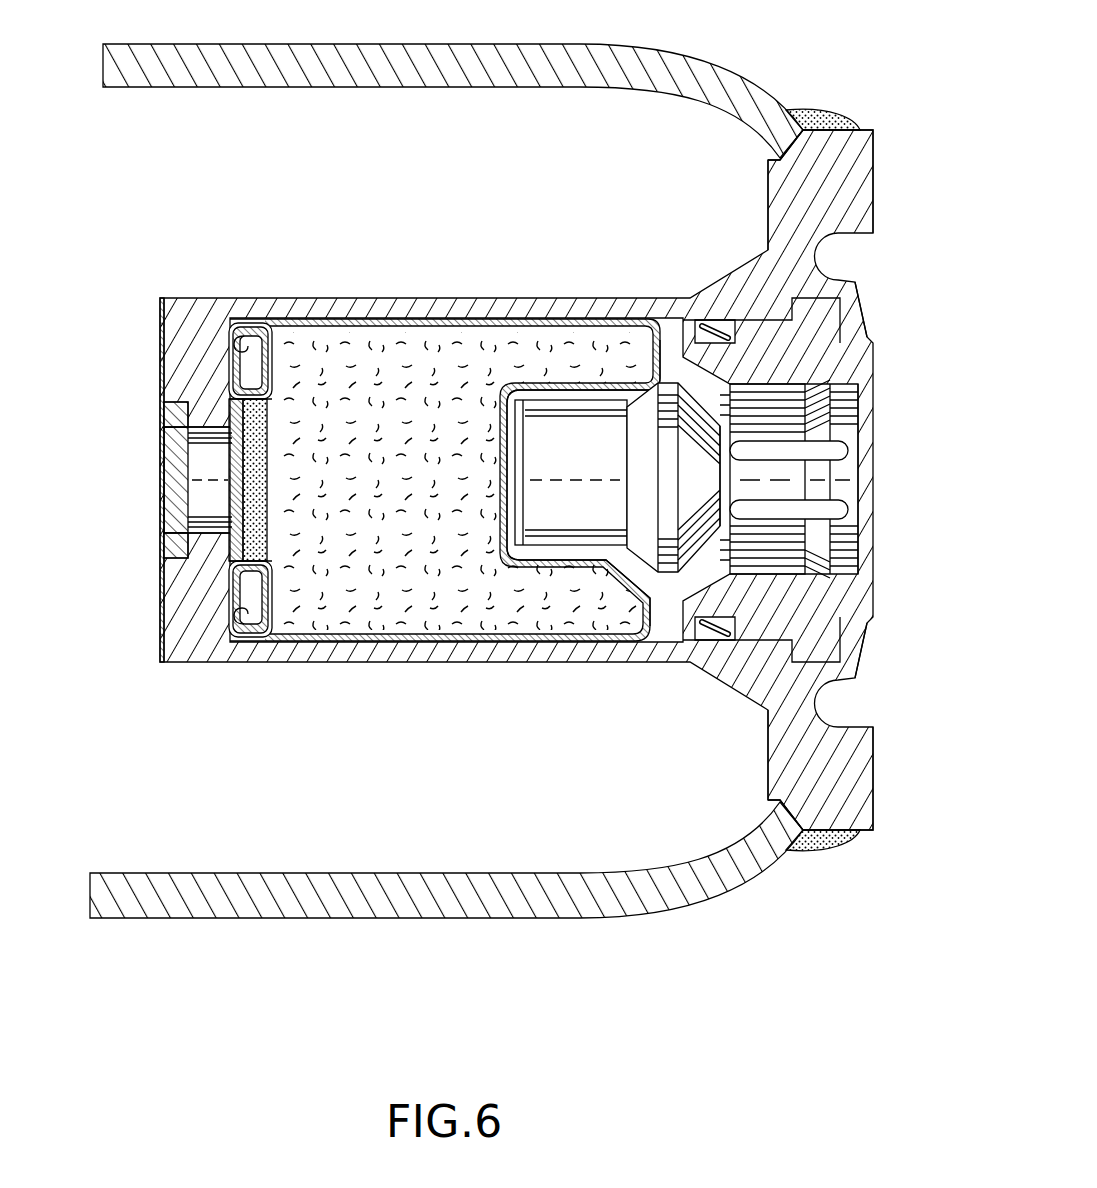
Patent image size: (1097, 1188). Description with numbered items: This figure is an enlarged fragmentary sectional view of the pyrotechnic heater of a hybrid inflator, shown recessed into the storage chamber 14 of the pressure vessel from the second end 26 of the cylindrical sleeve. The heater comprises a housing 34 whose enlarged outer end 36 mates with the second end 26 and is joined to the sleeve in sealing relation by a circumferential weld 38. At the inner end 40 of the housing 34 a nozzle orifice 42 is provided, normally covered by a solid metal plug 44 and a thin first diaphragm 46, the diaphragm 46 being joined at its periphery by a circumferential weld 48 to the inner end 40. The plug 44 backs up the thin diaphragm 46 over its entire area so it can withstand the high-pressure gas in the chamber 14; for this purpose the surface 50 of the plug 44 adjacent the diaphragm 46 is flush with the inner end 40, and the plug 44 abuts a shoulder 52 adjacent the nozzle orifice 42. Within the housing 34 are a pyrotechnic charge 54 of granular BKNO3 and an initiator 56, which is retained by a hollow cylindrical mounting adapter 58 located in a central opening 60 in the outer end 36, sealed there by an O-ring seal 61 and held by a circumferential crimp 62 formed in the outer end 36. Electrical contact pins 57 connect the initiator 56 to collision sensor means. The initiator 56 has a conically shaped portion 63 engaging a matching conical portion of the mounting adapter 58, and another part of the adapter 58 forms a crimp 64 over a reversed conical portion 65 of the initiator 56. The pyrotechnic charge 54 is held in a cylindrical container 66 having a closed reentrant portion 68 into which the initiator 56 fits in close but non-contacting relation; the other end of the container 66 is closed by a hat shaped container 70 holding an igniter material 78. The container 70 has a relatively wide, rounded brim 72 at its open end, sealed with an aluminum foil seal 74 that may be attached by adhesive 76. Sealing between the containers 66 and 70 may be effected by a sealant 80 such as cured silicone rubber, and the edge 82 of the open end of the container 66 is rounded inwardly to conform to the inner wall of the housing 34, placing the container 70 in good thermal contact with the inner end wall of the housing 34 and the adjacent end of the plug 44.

The storage chamber 14 is at (443, 107).
The second end 26 is at (728, 77).
The housing 34 is at (522, 292).
The enlarged outer end 36 is at (873, 182).
The circumferential weld 38 is at (827, 113).
The inner end 40 is at (160, 367).
The nozzle orifice 42 is at (160, 535).
The solid metal plug 44 is at (175, 493).
The first diaphragm 46 is at (160, 332).
The circumferential weld 48 is at (160, 653).
The surface 50 is at (160, 462).
The shoulder 52 is at (187, 412).
The pyrotechnic charge 54 is at (440, 590).
The initiator 56 is at (545, 535).
The electrical contact pins 57 is at (838, 500).
The mounting adapter 58 is at (865, 598).
The opening 60 is at (757, 320).
The O-ring seal 61 is at (712, 623).
The circumferential crimp 62 is at (873, 308).
The conically shaped portion 63 is at (710, 398).
The crimp 64 is at (628, 572).
The reversed conical portion 65 is at (630, 392).
The cylindrical container 66 is at (455, 318).
The closed reentrant portion 68 is at (563, 388).
The hat shaped container 70 is at (233, 393).
The brim 72 is at (247, 583).
The aluminum foil seal 74 is at (283, 396).
The adhesive 76 is at (273, 603).
The igniter material 78 is at (262, 462).
The sealant 80 is at (260, 623).
The edge 82 is at (238, 330).